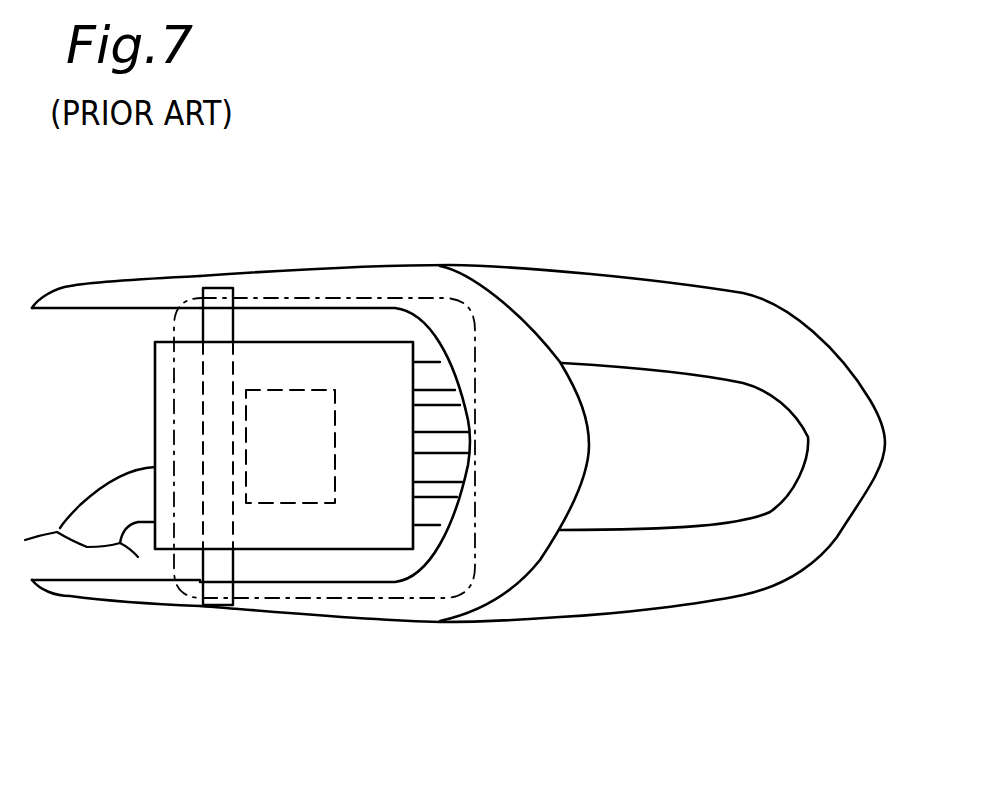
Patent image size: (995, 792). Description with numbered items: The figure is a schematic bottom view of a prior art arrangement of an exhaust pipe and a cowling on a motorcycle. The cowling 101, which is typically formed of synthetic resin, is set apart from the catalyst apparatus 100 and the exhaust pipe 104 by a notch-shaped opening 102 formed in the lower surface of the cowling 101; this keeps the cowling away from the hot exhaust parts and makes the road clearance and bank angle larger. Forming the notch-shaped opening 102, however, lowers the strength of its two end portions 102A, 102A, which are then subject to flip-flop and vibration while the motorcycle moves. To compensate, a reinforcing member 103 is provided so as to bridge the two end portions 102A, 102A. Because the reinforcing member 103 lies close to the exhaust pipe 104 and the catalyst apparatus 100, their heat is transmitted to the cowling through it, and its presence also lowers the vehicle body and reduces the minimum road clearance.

The catalyst apparatus 100 is at (297, 503).
The cowling 101 is at (443, 275).
The notch-shaped opening 102 is at (297, 312).
The end portions 102A is at (130, 290).
The reinforcing member 103 is at (235, 327).
The exhaust pipe 104 is at (273, 550).